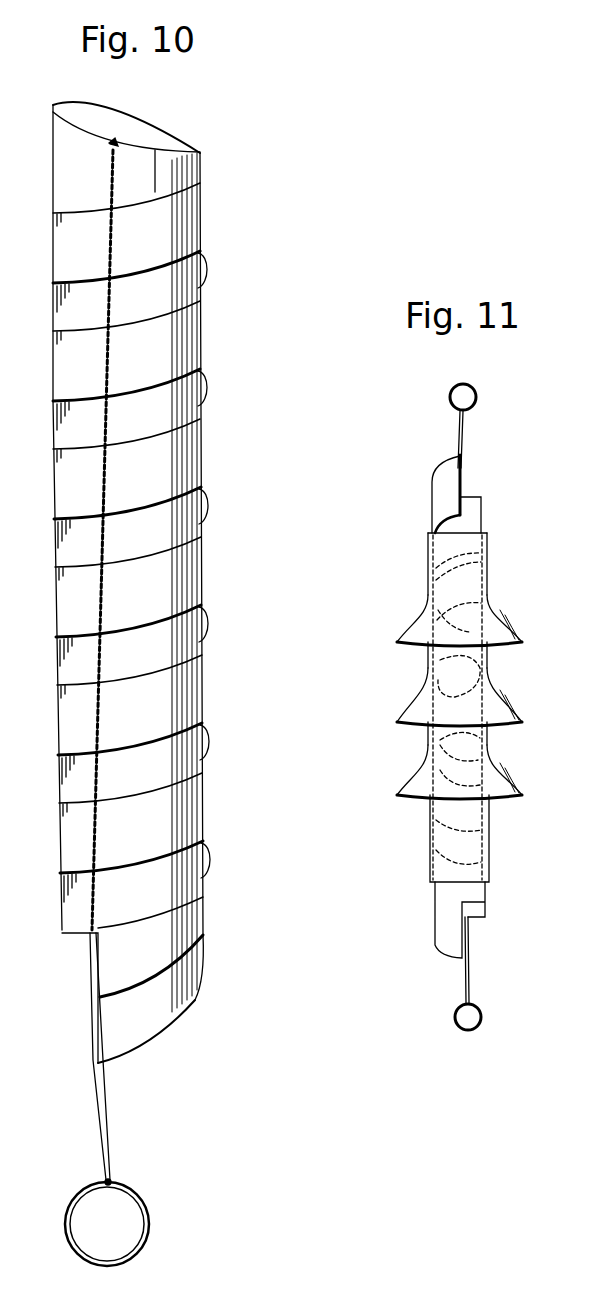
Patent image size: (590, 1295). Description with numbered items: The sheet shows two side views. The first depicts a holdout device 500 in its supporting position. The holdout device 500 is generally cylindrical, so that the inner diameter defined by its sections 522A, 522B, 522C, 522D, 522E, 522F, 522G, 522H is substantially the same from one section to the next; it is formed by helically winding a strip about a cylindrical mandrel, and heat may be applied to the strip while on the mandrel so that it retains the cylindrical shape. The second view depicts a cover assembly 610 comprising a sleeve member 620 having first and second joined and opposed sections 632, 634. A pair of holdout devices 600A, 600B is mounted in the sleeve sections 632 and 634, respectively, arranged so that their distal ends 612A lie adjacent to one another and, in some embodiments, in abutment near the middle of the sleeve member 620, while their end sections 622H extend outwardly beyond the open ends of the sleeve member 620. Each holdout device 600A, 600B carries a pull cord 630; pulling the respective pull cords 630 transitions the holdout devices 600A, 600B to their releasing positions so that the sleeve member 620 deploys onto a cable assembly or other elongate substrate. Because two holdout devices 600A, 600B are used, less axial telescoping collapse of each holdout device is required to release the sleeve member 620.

In FIG. 10, the holdout device 500 is at (238, 167).
In FIG. 10, the section 522A is at (163, 153).
In FIG. 10, the section 522B is at (170, 228).
In FIG. 10, the section 522C is at (172, 367).
In FIG. 10, the section 522D is at (174, 488).
In FIG. 10, the section 522E is at (160, 613).
In FIG. 10, the section 522F is at (158, 735).
In FIG. 10, the section 522G is at (180, 835).
In FIG. 10, the section 522H is at (150, 997).
In FIG. 11, the holdout device 600A is at (421, 500).
In FIG. 11, the holdout device 600B is at (426, 929).
In FIG. 11, the cover assembly 610 is at (497, 527).
In FIG. 11, the distal end 612A is at (497, 694).
In FIG. 11, the sleeve member 620 is at (501, 576).
In FIG. 11, the end section 622H is at (450, 468).
In FIG. 11, the pull cord 630 is at (463, 455).
In FIG. 11, the first section 632 is at (495, 630).
In FIG. 11, the second section 634 is at (490, 847).